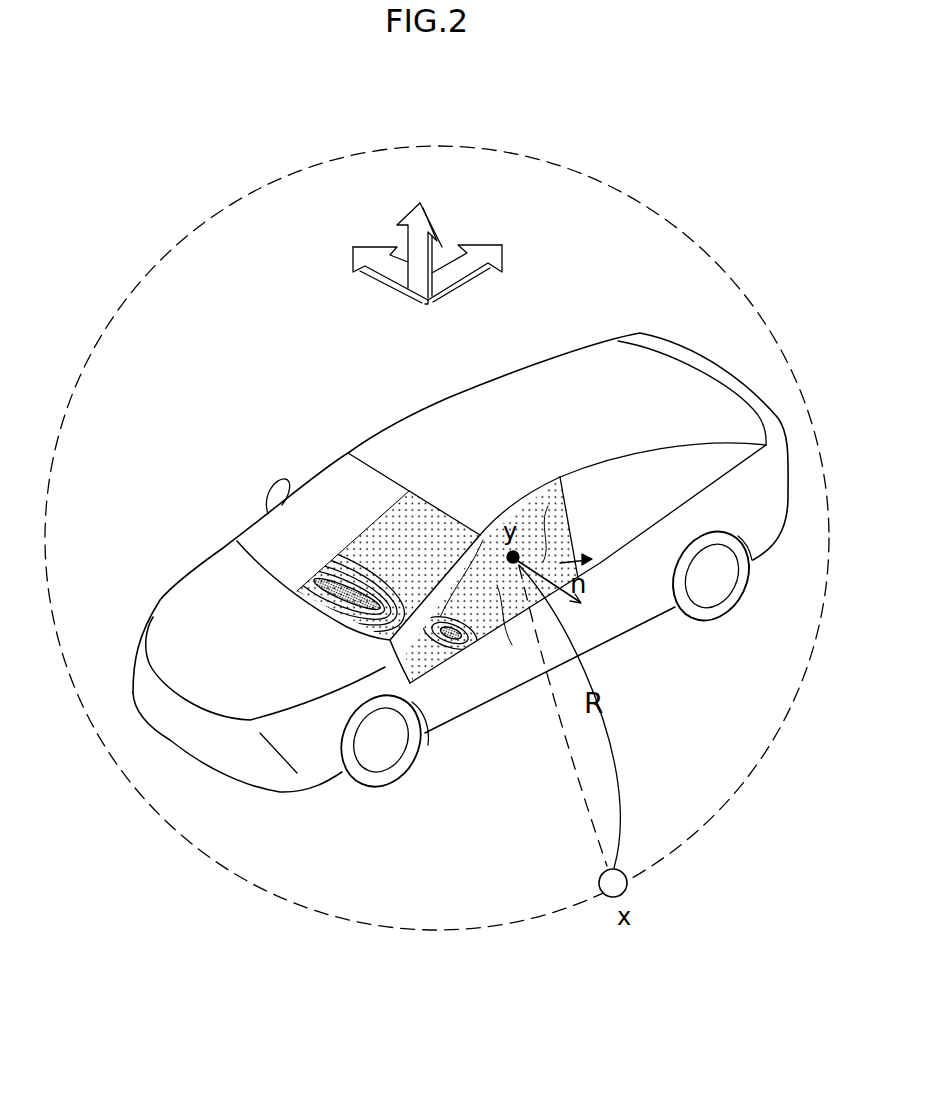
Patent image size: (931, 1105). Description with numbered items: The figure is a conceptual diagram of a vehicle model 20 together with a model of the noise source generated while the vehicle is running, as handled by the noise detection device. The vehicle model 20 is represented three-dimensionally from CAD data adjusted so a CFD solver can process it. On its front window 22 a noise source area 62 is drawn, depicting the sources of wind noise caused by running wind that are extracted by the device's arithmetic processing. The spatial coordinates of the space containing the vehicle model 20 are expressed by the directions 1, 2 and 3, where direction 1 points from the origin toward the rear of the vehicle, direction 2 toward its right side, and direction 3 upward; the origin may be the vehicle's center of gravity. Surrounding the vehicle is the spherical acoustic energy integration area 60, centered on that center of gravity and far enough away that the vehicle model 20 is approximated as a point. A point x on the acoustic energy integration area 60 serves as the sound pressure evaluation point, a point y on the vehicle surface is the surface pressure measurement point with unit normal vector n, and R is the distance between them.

The vehicle model 20 is at (444, 598).
The front window 22 is at (317, 476).
The acoustic energy integration area 60 is at (496, 147).
The noise source area 62 is at (322, 588).
The direction 1 is at (475, 261).
The direction 2 is at (380, 262).
The direction 3 is at (419, 235).